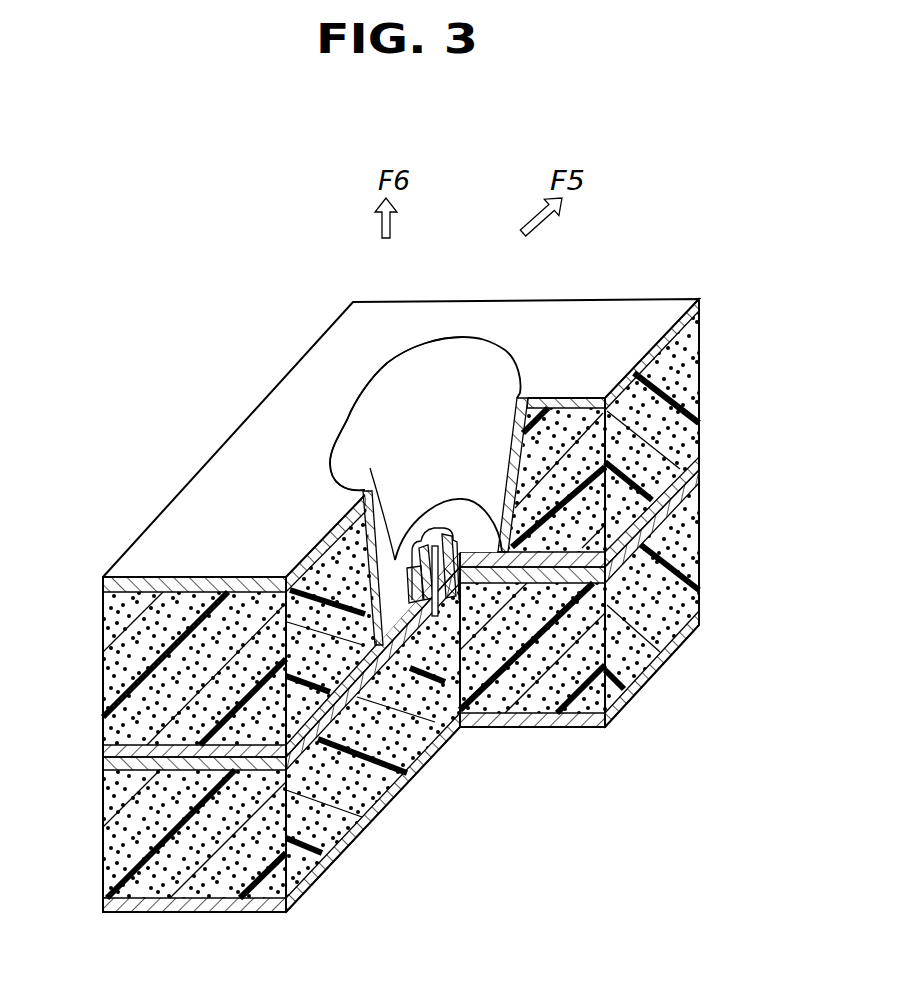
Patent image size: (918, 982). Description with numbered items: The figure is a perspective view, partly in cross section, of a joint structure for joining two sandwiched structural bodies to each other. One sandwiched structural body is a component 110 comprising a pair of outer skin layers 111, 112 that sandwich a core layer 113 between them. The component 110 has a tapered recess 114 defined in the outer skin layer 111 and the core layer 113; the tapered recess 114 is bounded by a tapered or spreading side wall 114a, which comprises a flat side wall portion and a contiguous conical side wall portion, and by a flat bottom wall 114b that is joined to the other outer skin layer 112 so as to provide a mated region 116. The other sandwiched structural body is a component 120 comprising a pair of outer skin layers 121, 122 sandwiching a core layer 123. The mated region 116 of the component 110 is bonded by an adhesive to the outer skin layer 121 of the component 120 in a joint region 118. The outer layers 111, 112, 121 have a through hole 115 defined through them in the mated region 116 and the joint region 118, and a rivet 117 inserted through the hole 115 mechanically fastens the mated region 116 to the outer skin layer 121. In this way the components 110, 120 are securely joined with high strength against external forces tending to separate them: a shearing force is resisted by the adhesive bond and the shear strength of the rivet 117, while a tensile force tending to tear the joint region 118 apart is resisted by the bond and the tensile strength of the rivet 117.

The component 110 is at (93, 578).
The outer skin layer 111 is at (700, 304).
The outer skin layer 112 is at (697, 463).
The core layer 113 is at (680, 390).
The tapered recess 114 is at (458, 366).
The side wall 114a is at (373, 397).
The flat bottom wall 114b is at (377, 470).
The through hole 115 is at (445, 600).
The mated region 116 is at (475, 558).
The rivet 117 is at (419, 540).
The joint region 118 is at (393, 572).
The component 120 is at (93, 762).
The outer skin layer 121 is at (698, 478).
The outer skin layer 122 is at (702, 612).
The core layer 123 is at (687, 558).